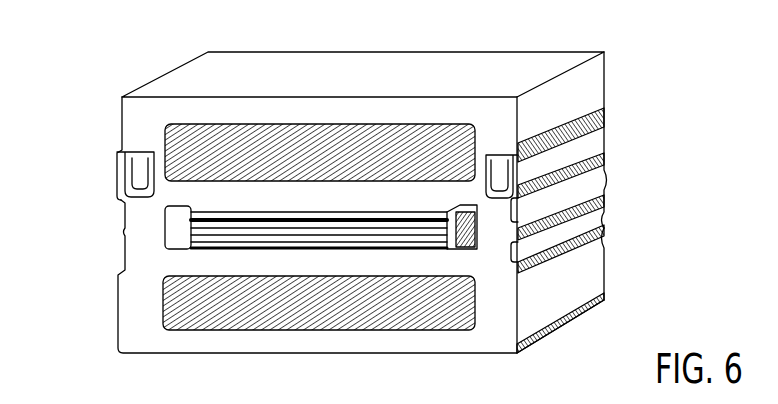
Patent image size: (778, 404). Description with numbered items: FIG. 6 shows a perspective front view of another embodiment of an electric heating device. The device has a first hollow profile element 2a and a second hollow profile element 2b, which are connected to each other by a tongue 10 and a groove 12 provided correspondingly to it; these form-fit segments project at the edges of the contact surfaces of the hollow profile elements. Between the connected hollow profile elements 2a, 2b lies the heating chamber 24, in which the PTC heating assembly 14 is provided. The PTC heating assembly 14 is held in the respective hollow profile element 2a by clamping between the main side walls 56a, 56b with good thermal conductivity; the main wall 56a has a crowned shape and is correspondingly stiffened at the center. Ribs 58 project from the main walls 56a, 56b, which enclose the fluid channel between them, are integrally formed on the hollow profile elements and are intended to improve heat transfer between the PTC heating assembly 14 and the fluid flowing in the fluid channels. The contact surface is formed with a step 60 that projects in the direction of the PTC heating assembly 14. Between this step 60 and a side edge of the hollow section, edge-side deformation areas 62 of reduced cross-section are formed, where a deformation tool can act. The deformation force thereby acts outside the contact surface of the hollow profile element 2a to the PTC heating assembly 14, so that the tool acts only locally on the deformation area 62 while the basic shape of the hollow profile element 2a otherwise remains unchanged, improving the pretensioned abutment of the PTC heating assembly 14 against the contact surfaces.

The first hollow profile element 2a is at (117, 318).
The second hollow profile element 2b is at (117, 130).
The tongue 10 is at (497, 165).
The groove 12 is at (559, 158).
The PTC heating assembly 14 is at (192, 238).
The heating chamber 24 is at (478, 232).
The main wall 56a is at (300, 187).
The main wall 56b is at (245, 258).
The ribs 58 is at (318, 177).
The step 60 is at (445, 212).
The edge-side deformation area 62 is at (177, 196).